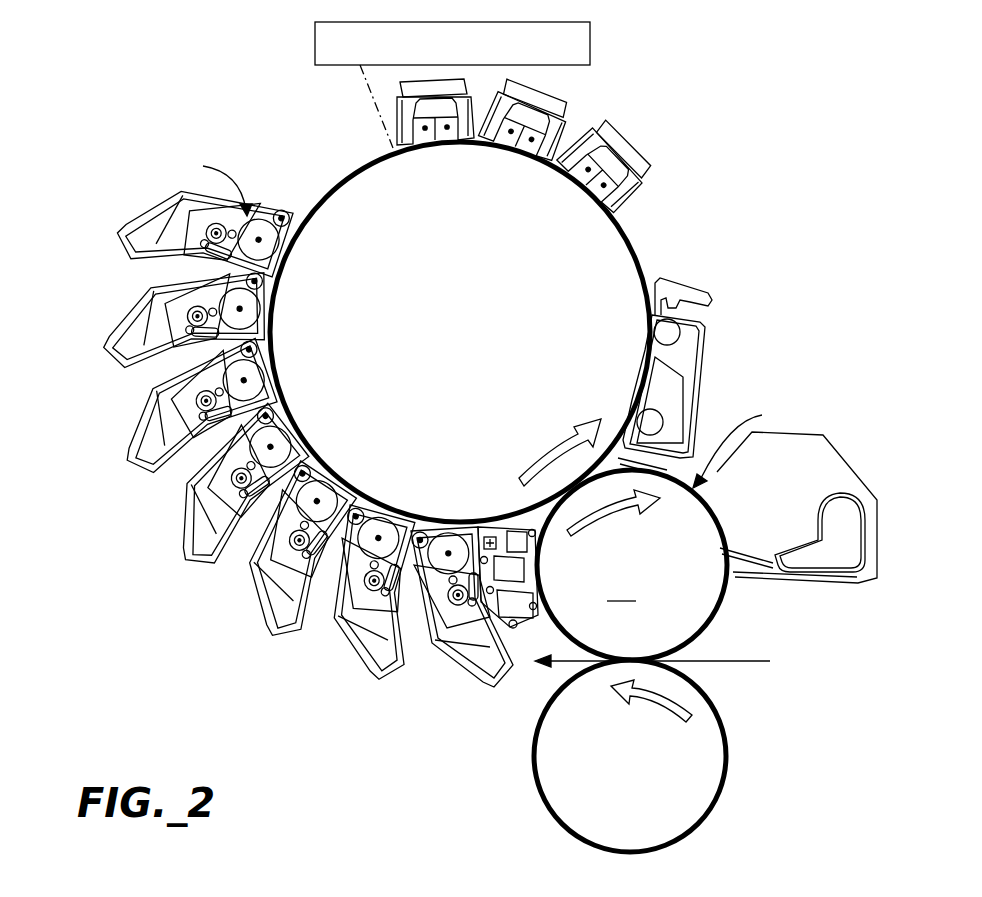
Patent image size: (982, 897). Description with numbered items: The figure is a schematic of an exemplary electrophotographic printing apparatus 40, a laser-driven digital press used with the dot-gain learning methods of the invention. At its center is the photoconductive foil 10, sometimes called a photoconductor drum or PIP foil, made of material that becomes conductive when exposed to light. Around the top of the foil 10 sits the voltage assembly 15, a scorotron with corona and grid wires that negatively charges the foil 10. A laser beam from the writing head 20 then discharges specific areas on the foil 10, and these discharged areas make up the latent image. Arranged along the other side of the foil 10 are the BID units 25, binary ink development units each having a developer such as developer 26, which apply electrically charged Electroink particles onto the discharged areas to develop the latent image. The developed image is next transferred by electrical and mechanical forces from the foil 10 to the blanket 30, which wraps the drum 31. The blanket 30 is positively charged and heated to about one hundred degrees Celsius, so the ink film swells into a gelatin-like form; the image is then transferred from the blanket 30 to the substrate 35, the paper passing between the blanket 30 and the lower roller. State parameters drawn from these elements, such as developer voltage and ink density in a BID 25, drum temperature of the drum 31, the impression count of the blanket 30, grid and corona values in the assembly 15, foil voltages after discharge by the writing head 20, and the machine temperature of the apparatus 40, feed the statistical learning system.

The photoconductive foil 10 is at (638, 250).
The voltage assembly 15 is at (638, 144).
The writing head 20 is at (590, 46).
The BID units 25 is at (270, 458).
The developer 26 is at (263, 230).
The blanket 30 is at (665, 565).
The drum 31 is at (621, 590).
The substrate 35 is at (733, 662).
The printing apparatus 40 is at (790, 86).